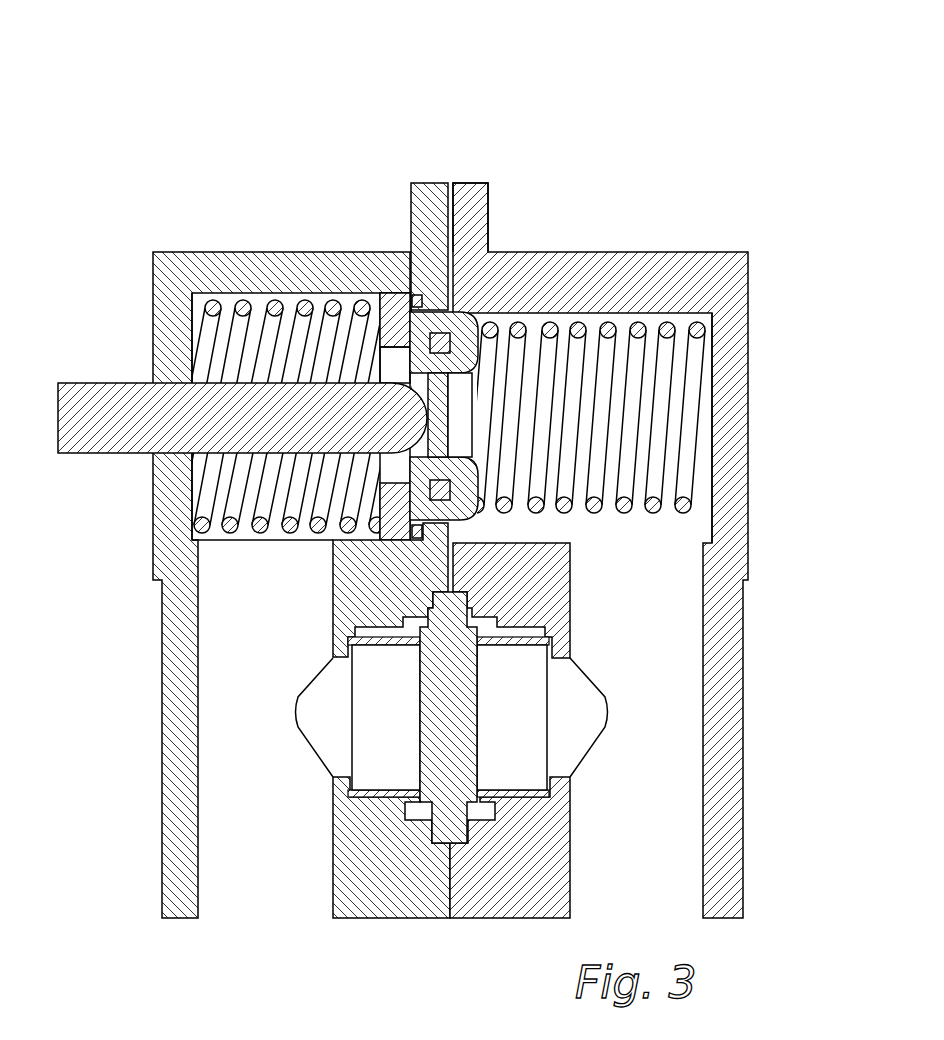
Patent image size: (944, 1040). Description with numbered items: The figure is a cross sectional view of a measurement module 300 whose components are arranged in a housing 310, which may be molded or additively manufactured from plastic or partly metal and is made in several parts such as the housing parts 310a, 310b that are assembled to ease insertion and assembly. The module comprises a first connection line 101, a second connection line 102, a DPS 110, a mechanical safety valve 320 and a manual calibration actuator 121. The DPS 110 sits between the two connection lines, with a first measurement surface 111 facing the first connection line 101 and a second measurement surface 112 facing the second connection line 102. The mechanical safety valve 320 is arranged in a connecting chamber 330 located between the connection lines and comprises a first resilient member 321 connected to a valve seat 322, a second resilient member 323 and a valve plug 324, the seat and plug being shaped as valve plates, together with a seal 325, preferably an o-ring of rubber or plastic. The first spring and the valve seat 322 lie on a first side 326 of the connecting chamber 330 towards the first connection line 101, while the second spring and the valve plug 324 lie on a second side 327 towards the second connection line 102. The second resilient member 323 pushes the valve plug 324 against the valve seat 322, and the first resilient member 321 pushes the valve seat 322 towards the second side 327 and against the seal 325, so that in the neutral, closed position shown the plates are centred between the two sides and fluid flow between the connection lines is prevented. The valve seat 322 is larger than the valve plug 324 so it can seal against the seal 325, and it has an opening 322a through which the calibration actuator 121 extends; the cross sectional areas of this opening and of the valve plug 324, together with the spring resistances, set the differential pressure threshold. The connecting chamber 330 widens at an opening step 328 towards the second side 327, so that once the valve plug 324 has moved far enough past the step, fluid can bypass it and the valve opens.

The measurement module 300 is at (143, 152).
The housing 310 is at (452, 152).
The housing part 310a is at (420, 183).
The housing part 310b is at (488, 183).
The mechanical safety valve 320 is at (478, 402).
The first resilient member 321 is at (240, 305).
The valve seat 322 is at (372, 293).
The opening 322a is at (390, 367).
The second resilient member 323 is at (550, 325).
The valve plug 324 is at (470, 323).
The seal 325 is at (417, 293).
The first side 326 is at (197, 500).
The second side 327 is at (710, 425).
The opening step 328 is at (513, 533).
The connecting chamber 330 is at (680, 362).
The manual calibration actuator 121 is at (113, 392).
The DPS 110 is at (453, 815).
The first measurement surface 111 is at (420, 730).
The second measurement surface 112 is at (480, 727).
The first connection line 101 is at (257, 890).
The second connection line 102 is at (648, 875).